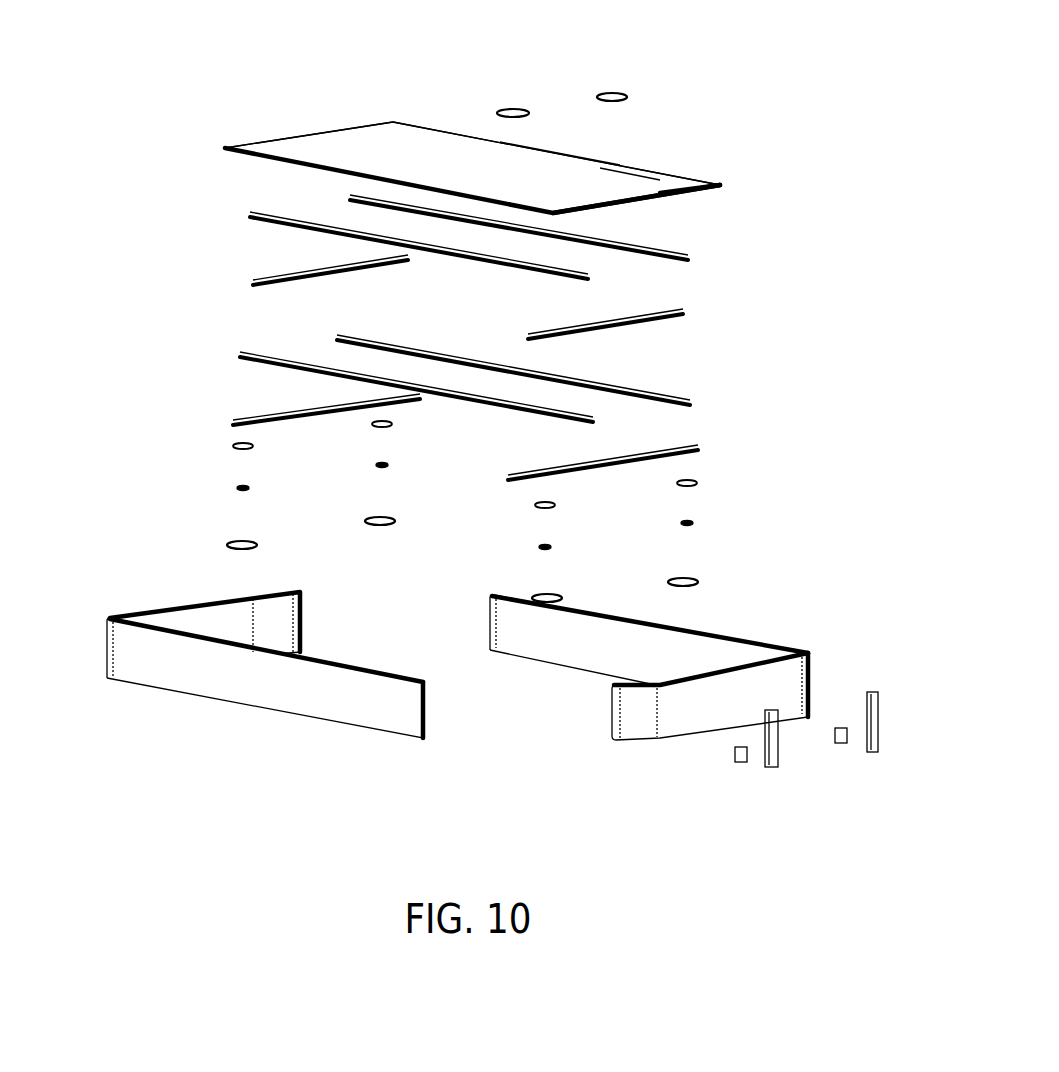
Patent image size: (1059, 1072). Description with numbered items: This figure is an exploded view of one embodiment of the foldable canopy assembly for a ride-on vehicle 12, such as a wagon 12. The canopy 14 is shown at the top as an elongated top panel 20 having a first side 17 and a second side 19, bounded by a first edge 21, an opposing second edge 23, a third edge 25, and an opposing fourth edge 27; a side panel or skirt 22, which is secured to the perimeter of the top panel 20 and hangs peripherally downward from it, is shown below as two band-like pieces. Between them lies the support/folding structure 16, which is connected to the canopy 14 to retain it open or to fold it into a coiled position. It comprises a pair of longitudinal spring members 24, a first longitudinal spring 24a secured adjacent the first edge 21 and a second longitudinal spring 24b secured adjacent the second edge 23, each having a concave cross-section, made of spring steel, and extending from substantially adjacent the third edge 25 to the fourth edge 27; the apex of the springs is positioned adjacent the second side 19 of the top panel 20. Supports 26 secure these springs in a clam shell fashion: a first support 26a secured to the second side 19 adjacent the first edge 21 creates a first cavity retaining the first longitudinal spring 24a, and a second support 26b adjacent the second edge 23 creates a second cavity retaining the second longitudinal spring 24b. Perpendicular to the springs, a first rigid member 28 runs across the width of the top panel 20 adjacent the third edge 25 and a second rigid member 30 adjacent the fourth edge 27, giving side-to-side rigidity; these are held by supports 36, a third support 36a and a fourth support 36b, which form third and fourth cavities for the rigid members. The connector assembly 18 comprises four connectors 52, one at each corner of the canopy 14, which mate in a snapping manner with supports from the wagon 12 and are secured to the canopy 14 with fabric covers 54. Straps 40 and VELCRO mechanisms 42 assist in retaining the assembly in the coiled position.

The ride-on vehicle 12 is at (762, 47).
The canopy 14 is at (360, 152).
The support/folding structure 16 is at (143, 240).
The first side 17 is at (628, 173).
The connector assembly 18 is at (90, 546).
The second side 19 is at (713, 208).
The top panel 20 is at (425, 128).
The first edge 21 is at (552, 153).
The side panel 22 is at (300, 696).
The second edge 23 is at (228, 150).
The longitudinal spring members 24 is at (350, 199).
The first longitudinal spring 24a is at (688, 258).
The second longitudinal spring 24b is at (588, 276).
The third edge 25 is at (665, 193).
The supports 26 is at (368, 378).
The first support 26a is at (690, 403).
The second support 26b is at (490, 409).
The fourth edge 27 is at (307, 130).
The first rigid member 28 is at (686, 312).
The second rigid member 30 is at (252, 282).
The supports 36 is at (305, 421).
The third support 36a is at (698, 450).
The fourth support 36b is at (233, 423).
The straps 40 is at (771, 768).
The VELCRO mechanisms 42 is at (513, 109).
The connectors 52 is at (384, 465).
The fabric covers 54 is at (378, 521).